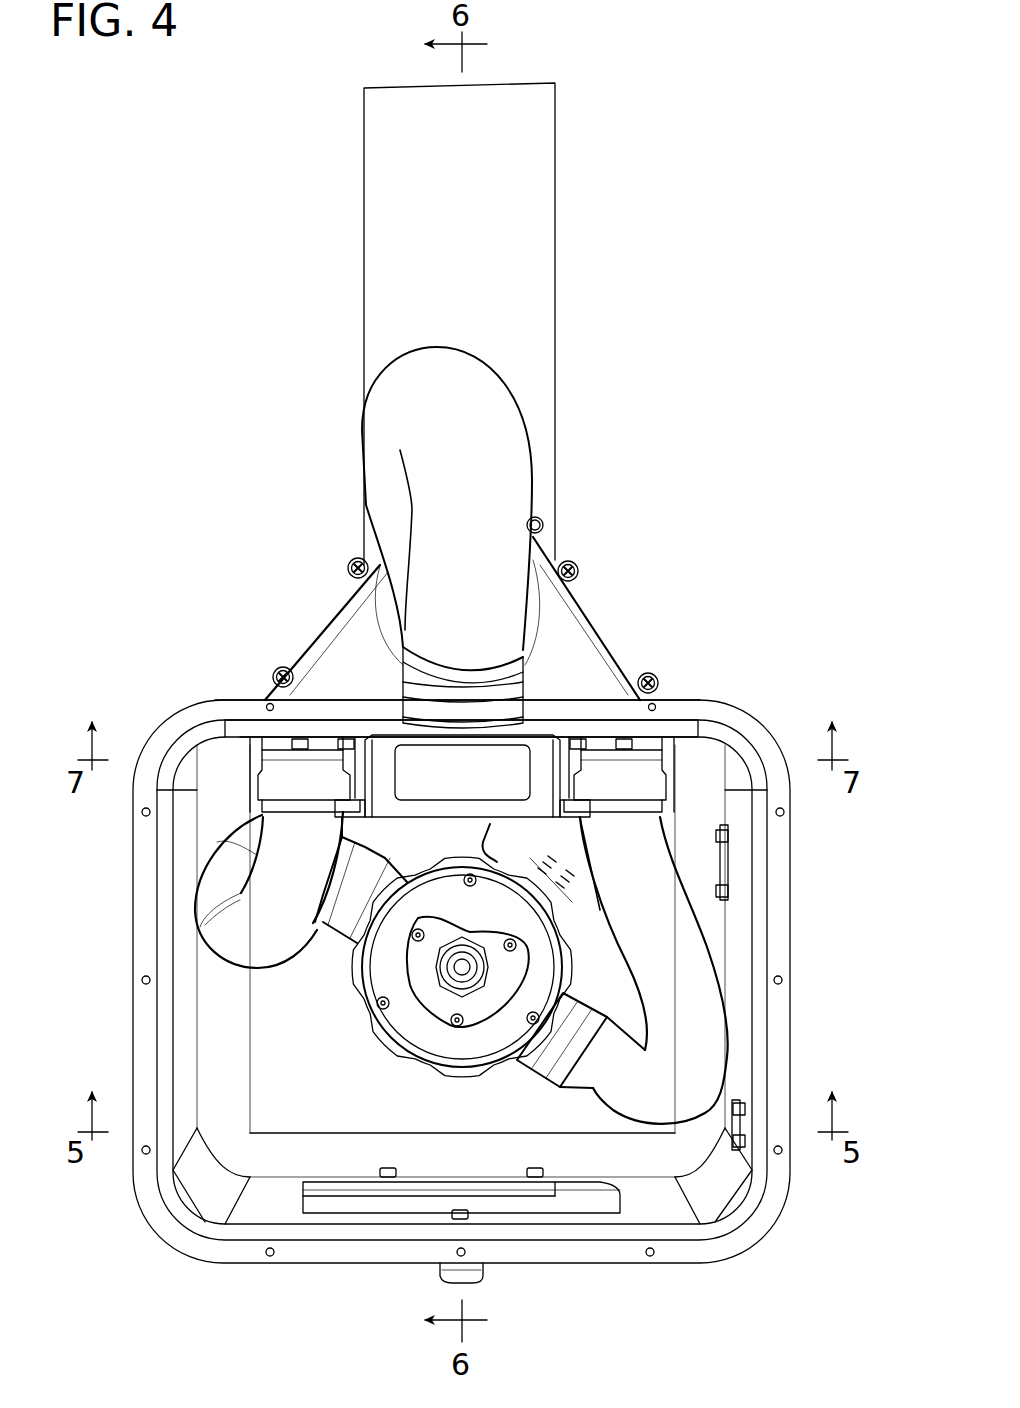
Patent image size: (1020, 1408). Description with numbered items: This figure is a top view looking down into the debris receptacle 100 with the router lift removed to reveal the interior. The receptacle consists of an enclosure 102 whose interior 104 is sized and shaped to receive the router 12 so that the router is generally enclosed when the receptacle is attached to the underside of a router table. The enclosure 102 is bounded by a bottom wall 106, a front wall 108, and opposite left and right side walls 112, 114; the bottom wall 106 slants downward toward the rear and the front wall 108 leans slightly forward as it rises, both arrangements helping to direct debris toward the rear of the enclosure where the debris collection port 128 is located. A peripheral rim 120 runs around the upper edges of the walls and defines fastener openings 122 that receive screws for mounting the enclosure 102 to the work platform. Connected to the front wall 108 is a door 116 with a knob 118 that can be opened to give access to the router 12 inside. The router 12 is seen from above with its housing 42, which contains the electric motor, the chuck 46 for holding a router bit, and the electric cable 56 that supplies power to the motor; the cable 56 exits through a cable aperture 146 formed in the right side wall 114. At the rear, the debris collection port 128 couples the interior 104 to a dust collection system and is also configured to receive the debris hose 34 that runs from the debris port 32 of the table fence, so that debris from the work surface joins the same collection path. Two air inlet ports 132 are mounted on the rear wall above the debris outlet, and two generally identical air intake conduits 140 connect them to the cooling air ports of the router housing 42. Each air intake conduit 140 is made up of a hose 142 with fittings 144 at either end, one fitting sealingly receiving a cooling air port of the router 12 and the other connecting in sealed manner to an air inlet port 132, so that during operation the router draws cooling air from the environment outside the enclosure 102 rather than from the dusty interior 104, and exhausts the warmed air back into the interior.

The router 12 is at (447, 996).
The debris port 32 is at (545, 703).
The debris hose 34 is at (540, 405).
The housing 42 is at (447, 866).
The chuck 46 is at (464, 930).
The electric cable 56 is at (573, 858).
The debris receptacle 100 is at (463, 965).
The enclosure 102 is at (148, 716).
The interior 104 is at (320, 1073).
The bottom wall 106 is at (440, 1108).
The front wall 108 is at (655, 1207).
The left side wall 112 is at (188, 1025).
The right side wall 114 is at (740, 933).
The door 116 is at (572, 1195).
The knob 118 is at (478, 1272).
The peripheral rim 120 is at (160, 1250).
The fastener openings 122 is at (265, 704).
The debris collection port 128 is at (570, 628).
The air inlet ports 132 is at (327, 740).
The air intake conduit 140 is at (183, 846).
The hose 142 is at (215, 880).
The fittings 144 is at (270, 760).
The cable aperture 146 is at (732, 882).